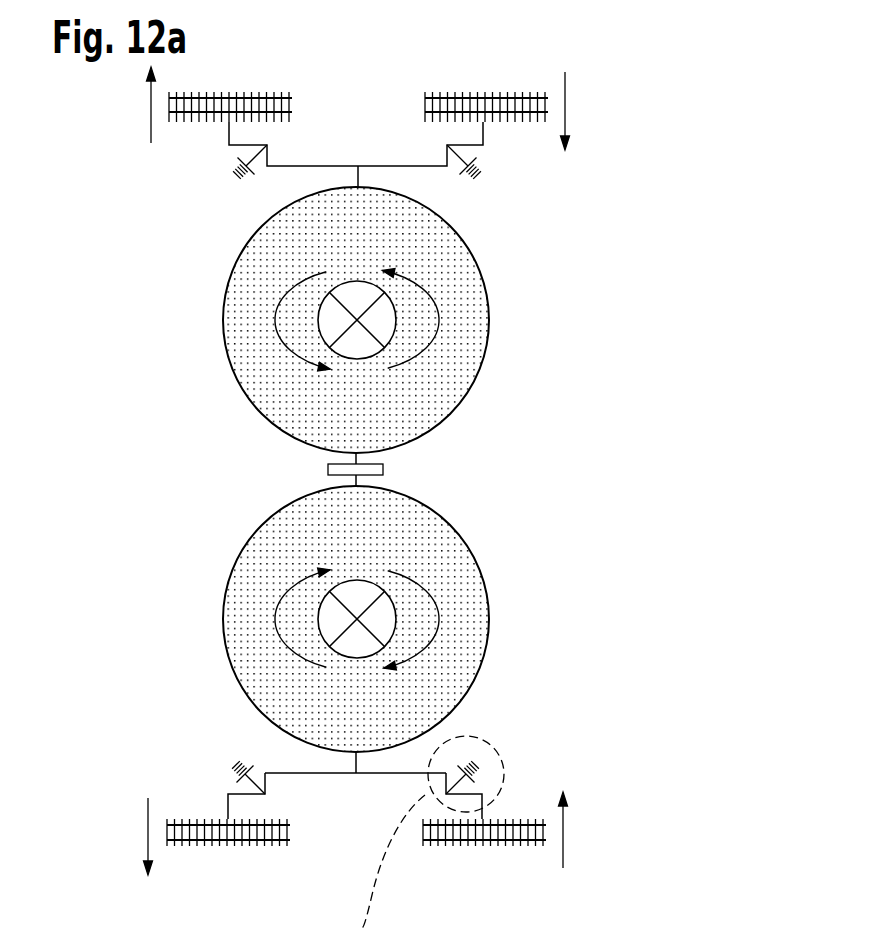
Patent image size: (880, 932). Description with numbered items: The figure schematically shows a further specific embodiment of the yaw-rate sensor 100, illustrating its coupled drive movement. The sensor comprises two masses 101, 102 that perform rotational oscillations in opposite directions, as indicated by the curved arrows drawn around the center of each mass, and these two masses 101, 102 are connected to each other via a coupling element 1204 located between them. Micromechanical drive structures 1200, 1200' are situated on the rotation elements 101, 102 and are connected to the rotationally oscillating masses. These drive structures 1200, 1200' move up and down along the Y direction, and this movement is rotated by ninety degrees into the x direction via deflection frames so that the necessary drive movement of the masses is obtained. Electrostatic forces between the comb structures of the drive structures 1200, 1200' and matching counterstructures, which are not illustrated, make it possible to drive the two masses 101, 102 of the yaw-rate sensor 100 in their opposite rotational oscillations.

The yaw-rate sensor 100 is at (696, 200).
The mass 101 is at (468, 288).
The mass 102 is at (468, 586).
The coupling element 1204 is at (383, 471).
The micromechanical drive structure 1200 is at (516, 834).
The micromechanical drive structure 1200' is at (551, 78).